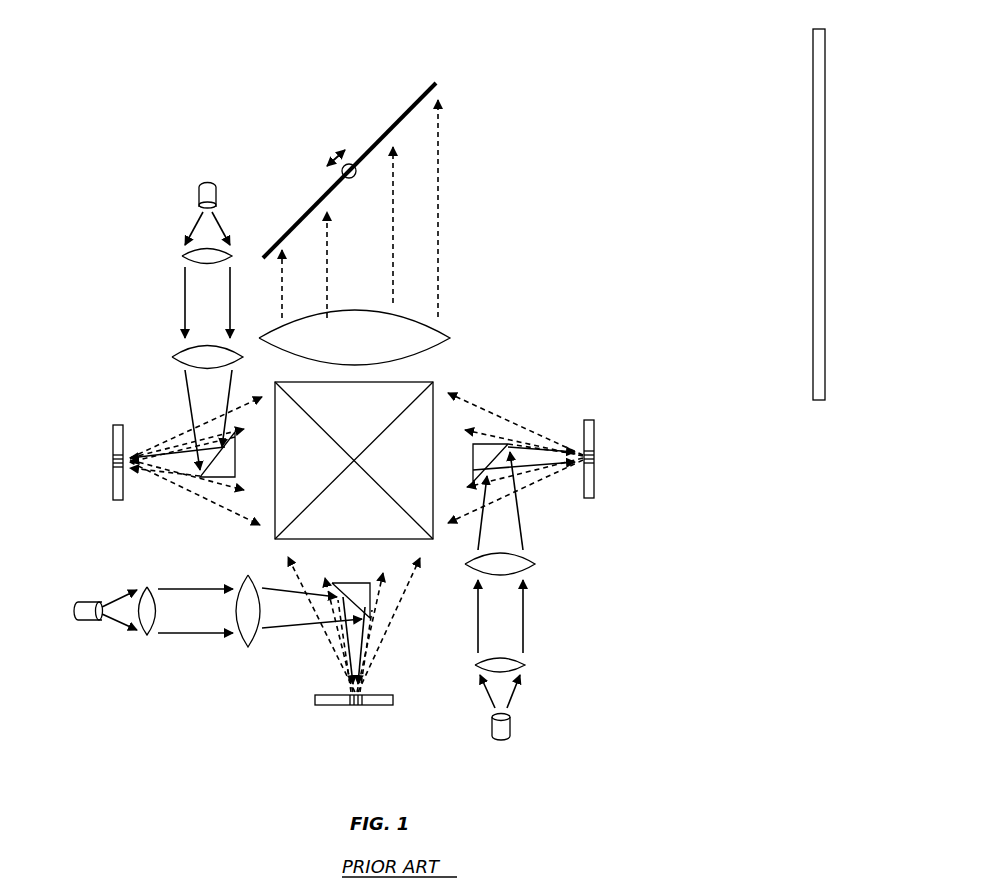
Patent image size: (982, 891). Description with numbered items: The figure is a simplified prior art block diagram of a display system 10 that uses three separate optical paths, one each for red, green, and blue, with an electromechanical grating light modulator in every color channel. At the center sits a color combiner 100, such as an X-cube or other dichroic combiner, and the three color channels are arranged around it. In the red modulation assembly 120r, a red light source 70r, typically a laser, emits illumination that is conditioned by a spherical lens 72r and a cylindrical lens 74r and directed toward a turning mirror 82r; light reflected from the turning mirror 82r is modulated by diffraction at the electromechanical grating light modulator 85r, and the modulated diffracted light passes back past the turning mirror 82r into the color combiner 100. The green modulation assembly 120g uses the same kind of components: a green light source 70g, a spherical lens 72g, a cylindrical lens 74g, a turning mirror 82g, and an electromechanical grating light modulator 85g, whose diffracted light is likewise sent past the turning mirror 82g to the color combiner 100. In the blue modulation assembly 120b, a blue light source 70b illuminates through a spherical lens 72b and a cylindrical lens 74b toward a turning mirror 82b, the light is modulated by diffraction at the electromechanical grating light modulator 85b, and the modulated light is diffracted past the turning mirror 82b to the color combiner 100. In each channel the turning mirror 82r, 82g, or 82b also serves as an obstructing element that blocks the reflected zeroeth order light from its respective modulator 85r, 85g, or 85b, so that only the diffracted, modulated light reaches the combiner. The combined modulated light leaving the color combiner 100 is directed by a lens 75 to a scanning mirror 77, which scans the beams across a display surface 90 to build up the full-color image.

The display system 10 is at (672, 163).
The scanning mirror 77 is at (403, 112).
The lens 75 is at (415, 318).
The color combiner 100 is at (423, 380).
The blue modulation assembly 120b is at (180, 172).
The green modulation assembly 120g is at (177, 660).
The red modulation assembly 120r is at (622, 597).
The blue light source 70b is at (198, 197).
The spherical lens 72b is at (182, 257).
The cylindrical lens 74b is at (182, 353).
The turning mirror 82b is at (220, 483).
The electromechanical grating light modulator 85b is at (114, 428).
The green light source 70g is at (82, 603).
The spherical lens 72g is at (145, 583).
The cylindrical lens 74g is at (240, 577).
The turning mirror 82g is at (373, 588).
The electromechanical grating light modulator 85g is at (370, 703).
The red light source 70r is at (512, 723).
The spherical lens 72r is at (522, 662).
The cylindrical lens 74r is at (530, 568).
The turning mirror 82r is at (487, 438).
The electromechanical grating light modulator 85r is at (595, 428).
The display surface 90 is at (815, 376).